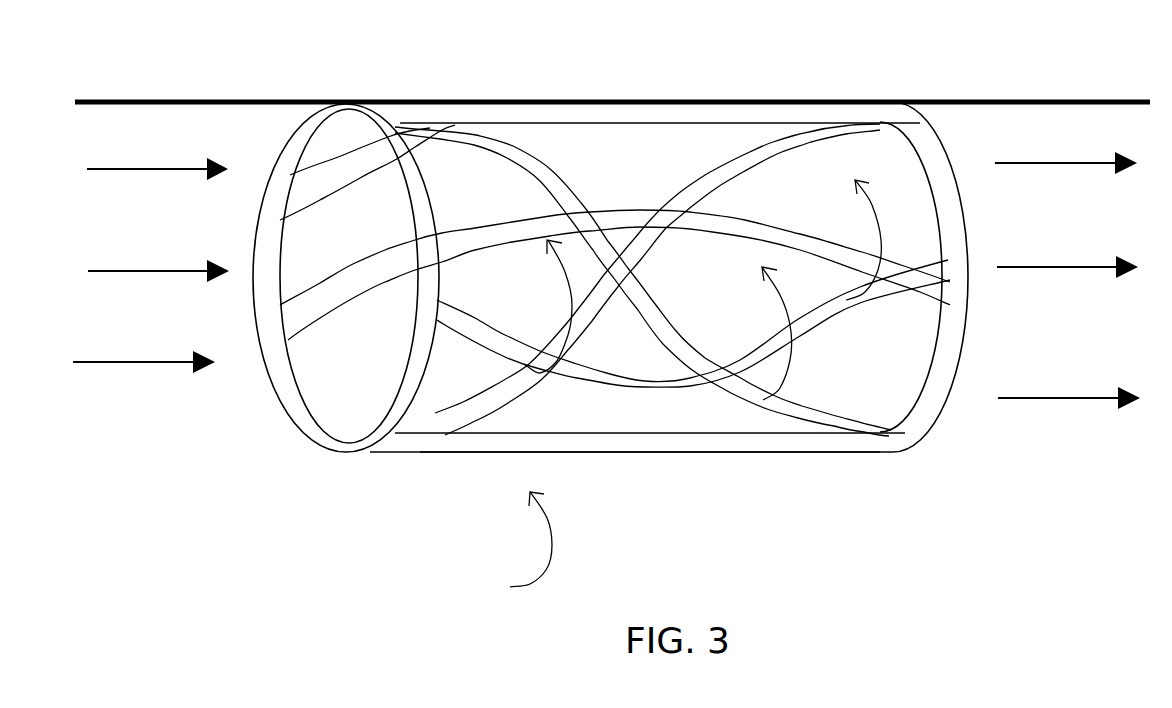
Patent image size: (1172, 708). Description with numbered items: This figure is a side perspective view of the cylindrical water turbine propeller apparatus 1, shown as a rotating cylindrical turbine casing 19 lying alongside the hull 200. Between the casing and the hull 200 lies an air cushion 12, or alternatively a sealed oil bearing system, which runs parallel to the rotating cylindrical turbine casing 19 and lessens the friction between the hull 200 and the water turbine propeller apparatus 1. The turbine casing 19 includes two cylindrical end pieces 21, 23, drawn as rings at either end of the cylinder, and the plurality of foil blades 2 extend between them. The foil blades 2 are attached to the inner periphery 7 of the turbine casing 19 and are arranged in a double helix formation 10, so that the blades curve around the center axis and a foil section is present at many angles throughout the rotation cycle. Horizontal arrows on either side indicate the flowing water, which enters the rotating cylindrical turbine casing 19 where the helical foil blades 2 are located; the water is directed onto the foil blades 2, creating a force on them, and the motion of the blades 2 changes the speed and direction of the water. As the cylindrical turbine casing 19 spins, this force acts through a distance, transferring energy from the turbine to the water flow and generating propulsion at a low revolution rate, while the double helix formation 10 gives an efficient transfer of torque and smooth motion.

The hull 200 is at (250, 98).
The water turbine propeller apparatus 1 is at (560, 122).
The air cushion 12 is at (768, 112).
The double helix formation 10 is at (734, 198).
The inner periphery 7 is at (310, 409).
The cylindrical end piece 21 is at (405, 392).
The turbine casing 19 is at (445, 445).
The foil blades 2 is at (795, 417).
The cylindrical end piece 23 is at (933, 410).